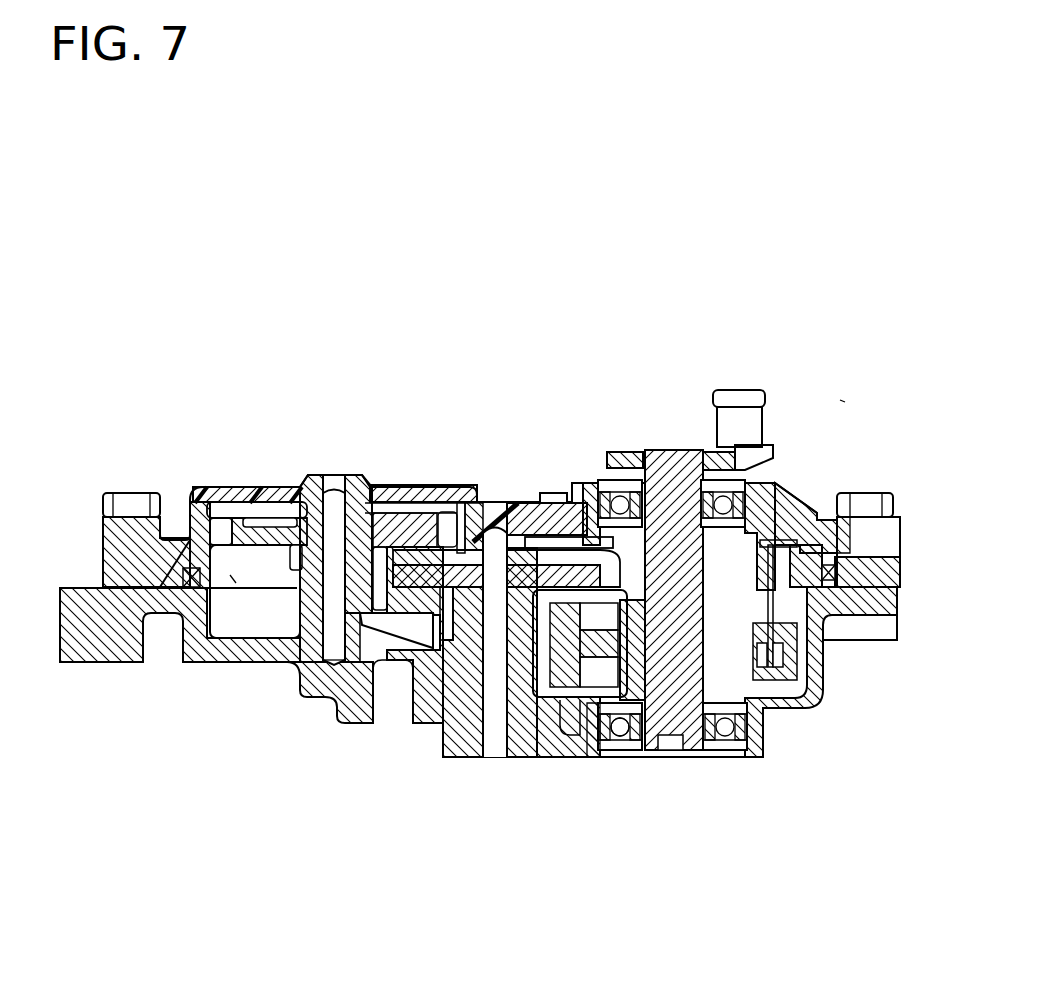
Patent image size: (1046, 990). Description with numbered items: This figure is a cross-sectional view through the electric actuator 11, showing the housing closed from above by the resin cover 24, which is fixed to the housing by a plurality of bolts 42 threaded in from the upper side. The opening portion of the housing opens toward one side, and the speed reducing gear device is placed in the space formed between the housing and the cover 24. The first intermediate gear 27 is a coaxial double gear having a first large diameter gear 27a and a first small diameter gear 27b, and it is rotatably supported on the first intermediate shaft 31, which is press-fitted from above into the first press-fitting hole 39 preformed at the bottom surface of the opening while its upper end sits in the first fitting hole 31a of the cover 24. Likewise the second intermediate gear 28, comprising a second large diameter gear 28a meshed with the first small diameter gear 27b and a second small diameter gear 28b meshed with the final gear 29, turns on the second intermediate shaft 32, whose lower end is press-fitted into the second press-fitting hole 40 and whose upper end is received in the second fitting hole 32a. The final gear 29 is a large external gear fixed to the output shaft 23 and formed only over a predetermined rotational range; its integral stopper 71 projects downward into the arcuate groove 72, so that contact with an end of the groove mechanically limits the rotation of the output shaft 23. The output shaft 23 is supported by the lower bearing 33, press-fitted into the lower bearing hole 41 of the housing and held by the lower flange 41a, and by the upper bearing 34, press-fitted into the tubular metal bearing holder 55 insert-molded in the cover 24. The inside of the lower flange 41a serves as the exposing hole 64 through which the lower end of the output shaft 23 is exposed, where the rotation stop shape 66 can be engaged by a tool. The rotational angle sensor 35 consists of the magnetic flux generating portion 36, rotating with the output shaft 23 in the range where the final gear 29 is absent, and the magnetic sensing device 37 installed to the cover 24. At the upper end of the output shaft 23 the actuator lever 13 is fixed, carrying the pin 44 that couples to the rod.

The electric actuator 11 is at (857, 395).
The actuator lever 13 is at (717, 458).
The output shaft 23 is at (676, 476).
The cover 24 is at (885, 540).
The first intermediate gear 27 is at (246, 510).
The first large diameter gear 27a is at (223, 527).
The first small diameter gear 27b is at (295, 560).
The second intermediate gear 28 is at (386, 671).
The second large diameter gear 28a is at (375, 585).
The second small diameter gear 28b is at (447, 675).
The final gear 29 is at (560, 705).
The first intermediate shaft 31 is at (333, 603).
The first fitting hole 31a is at (348, 490).
The second intermediate shaft 32 is at (490, 690).
The second fitting hole 32a is at (480, 545).
The lower bearing 33 is at (619, 728).
The upper bearing 34 is at (620, 503).
The rotational angle sensor 35 is at (839, 644).
The magnetic flux generating portion 36 is at (780, 660).
The magnetic sensing device 37 is at (880, 672).
The first press-fitting hole 39 is at (333, 662).
The second press-fitting hole 40 is at (495, 697).
The lower bearing hole 41 is at (605, 745).
The lower flange 41a is at (730, 750).
The bolt 42 is at (132, 495).
The pin 44 is at (738, 415).
The bearing holder 55 is at (755, 492).
The exposing hole 64 is at (692, 762).
The rotation stop shape 66 is at (668, 750).
The stopper 71 is at (565, 675).
The arcuate groove 72 is at (580, 715).